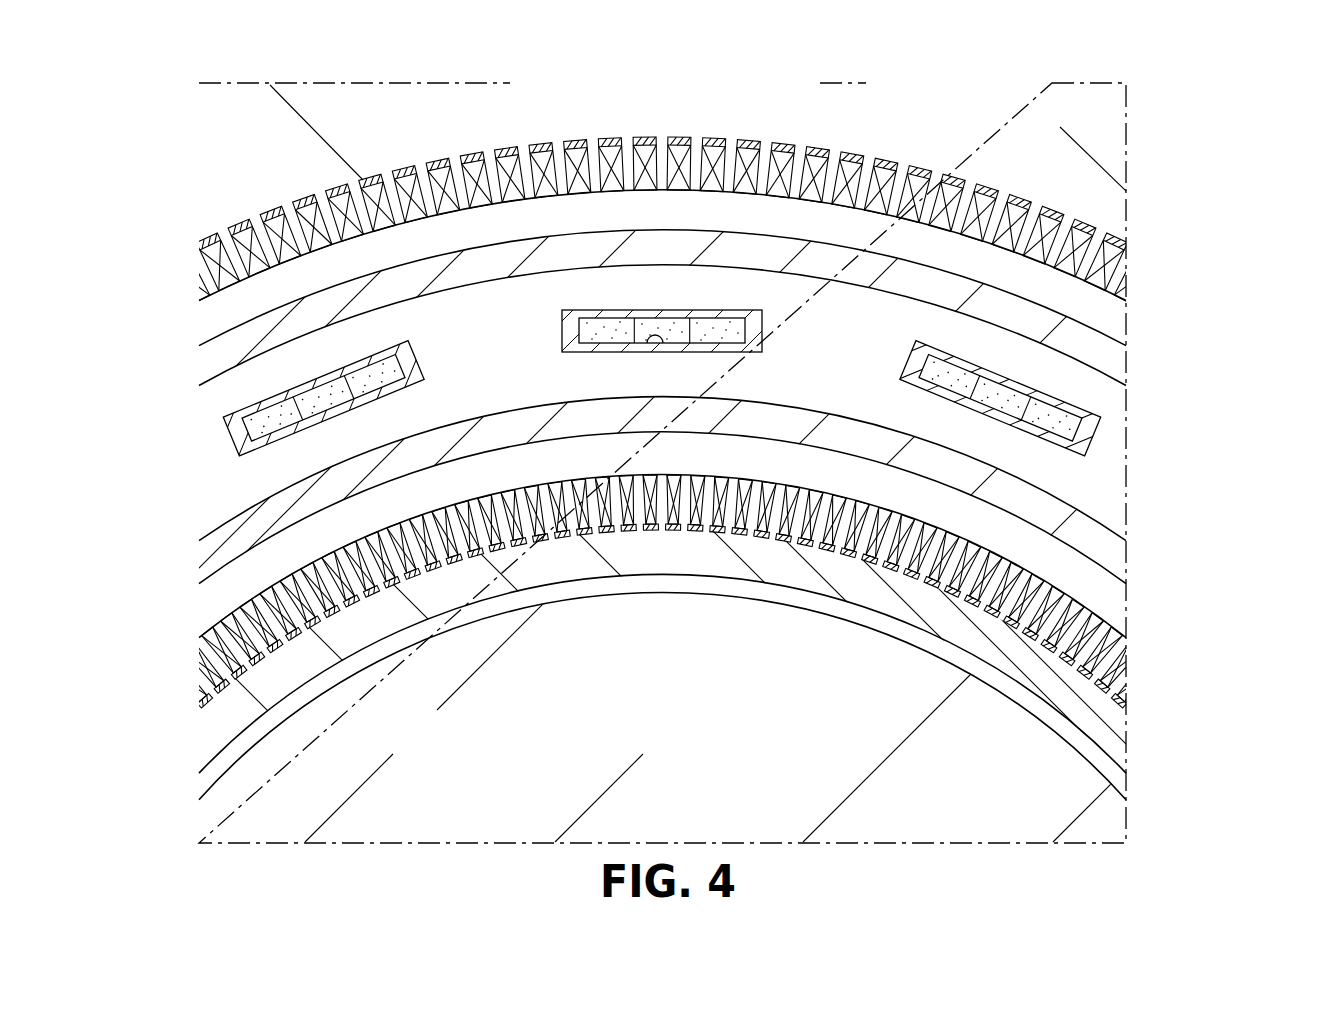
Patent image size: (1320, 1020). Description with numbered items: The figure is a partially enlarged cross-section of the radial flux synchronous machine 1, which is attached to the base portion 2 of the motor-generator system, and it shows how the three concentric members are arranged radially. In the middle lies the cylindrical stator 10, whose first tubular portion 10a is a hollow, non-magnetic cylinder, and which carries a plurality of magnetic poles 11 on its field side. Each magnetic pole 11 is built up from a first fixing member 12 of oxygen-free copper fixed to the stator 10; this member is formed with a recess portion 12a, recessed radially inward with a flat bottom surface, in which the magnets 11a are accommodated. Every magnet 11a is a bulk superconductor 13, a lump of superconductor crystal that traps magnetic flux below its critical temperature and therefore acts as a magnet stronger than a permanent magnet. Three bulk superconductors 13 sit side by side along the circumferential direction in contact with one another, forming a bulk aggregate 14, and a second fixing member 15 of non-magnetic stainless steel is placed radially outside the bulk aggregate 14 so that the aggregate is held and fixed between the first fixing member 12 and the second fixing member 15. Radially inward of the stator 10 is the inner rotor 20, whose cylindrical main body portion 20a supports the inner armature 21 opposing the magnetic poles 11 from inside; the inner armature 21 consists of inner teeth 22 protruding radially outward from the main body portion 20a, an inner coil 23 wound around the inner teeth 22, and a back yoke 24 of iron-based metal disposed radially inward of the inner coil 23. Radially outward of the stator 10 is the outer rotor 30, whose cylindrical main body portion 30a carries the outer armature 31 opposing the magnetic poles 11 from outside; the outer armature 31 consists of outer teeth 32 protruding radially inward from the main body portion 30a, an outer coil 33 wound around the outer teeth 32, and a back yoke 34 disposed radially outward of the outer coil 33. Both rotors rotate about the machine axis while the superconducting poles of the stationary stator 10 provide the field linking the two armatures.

The radial flux synchronous machine 1 is at (1173, 155).
The base portion 2 is at (712, 791).
The stator 10 is at (660, 450).
The first tubular portion 10a is at (189, 358).
The magnetic pole 11 is at (430, 365).
The magnet 11a is at (967, 406).
The first fixing member 12 is at (398, 388).
The recess portion 12a is at (316, 412).
The bulk superconductor 13 is at (691, 310).
The bulk aggregate 14 is at (820, 83).
The second fixing member 15 is at (737, 313).
The inner rotor 20 is at (382, 656).
The main body portion 20a is at (832, 572).
The inner armature 21 is at (550, 663).
The inner teeth 22 is at (687, 517).
The inner coil 23 is at (642, 530).
The back yoke 24 is at (600, 545).
The outer rotor 30 is at (1070, 288).
The main body portion 30a is at (257, 131).
The outer armature 31 is at (870, 97).
The outer teeth 32 is at (895, 182).
The outer coil 33 is at (932, 182).
The back yoke 34 is at (983, 178).